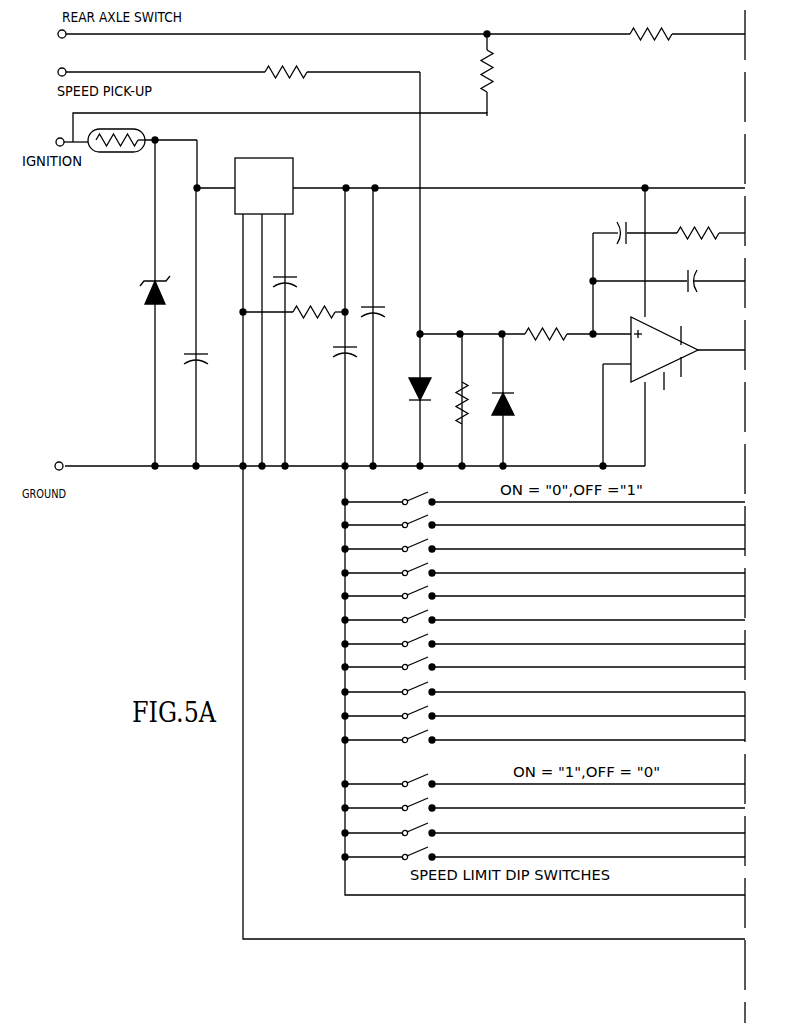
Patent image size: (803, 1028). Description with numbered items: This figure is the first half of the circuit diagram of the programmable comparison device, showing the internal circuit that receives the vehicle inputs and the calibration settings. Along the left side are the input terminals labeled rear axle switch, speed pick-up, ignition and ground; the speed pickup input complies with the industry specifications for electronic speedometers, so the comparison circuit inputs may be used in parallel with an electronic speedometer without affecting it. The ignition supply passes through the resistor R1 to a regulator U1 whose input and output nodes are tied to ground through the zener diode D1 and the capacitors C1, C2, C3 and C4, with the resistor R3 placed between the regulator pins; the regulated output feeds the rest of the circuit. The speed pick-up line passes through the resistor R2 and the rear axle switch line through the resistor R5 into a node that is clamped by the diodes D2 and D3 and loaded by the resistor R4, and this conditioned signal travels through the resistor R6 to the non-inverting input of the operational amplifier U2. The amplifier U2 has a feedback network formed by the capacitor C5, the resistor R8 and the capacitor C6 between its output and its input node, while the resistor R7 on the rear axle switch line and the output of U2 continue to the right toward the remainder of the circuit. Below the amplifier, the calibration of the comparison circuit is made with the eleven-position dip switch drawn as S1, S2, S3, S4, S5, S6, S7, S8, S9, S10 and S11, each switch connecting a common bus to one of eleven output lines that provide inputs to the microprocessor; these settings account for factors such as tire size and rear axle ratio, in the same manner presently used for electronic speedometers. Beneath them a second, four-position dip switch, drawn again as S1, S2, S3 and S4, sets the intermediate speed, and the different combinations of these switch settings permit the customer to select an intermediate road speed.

The resistor R1 (ignition input) R1 is at (116, 151).
The resistor R2 (speed pick-up input) R2 is at (286, 82).
The resistor R3 is at (314, 321).
The resistor R4 is at (456, 405).
The resistor R5 is at (498, 73).
The resistor R6 is at (546, 324).
The resistor R7 is at (651, 24).
The resistor R8 is at (711, 224).
The capacitor C1 is at (207, 327).
The capacitor C2 is at (296, 285).
The capacitor C3 is at (338, 361).
The capacitor C4 is at (384, 315).
The capacitor C5 is at (635, 222).
The capacitor C6 is at (669, 271).
The zener diode D1 is at (143, 303).
The diode D2 is at (411, 389).
The diode D3 is at (519, 404).
The voltage regulator U1 is at (267, 197).
The operational amplifier U2 is at (674, 327).
The dip switch position S1 is at (543, 636).
The dip switch position S2 is at (543, 659).
The dip switch position S3 is at (543, 684).
The dip switch position S4 is at (543, 708).
The dip switch position S5 is at (543, 589).
The dip switch position S6 is at (543, 613).
The dip switch position S7 is at (543, 637).
The dip switch position S8 is at (543, 660).
The dip switch position S9 is at (543, 685).
The dip switch position S10 is at (543, 709).
The dip switch position S11 is at (543, 733).